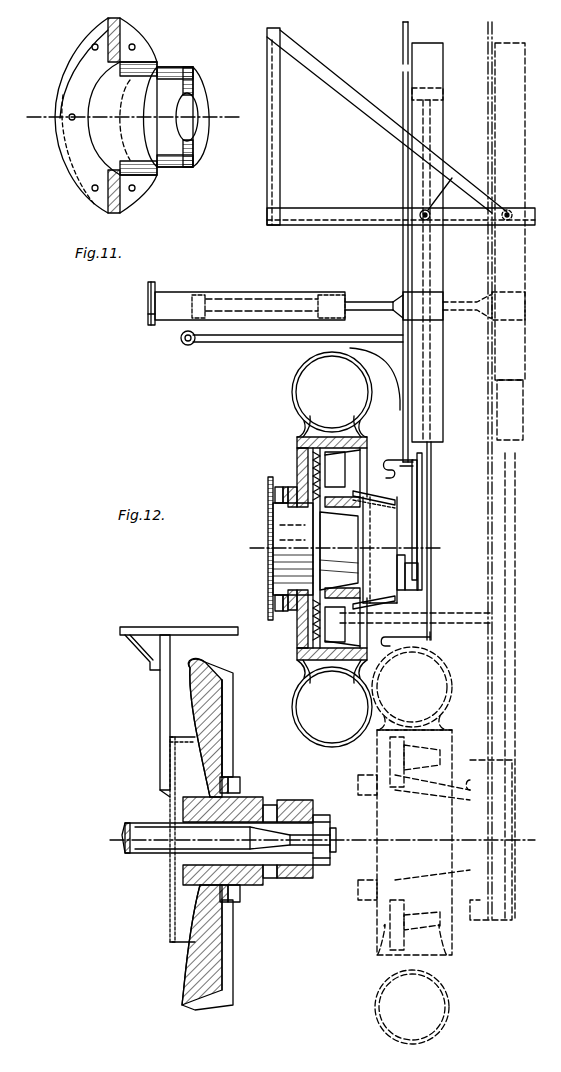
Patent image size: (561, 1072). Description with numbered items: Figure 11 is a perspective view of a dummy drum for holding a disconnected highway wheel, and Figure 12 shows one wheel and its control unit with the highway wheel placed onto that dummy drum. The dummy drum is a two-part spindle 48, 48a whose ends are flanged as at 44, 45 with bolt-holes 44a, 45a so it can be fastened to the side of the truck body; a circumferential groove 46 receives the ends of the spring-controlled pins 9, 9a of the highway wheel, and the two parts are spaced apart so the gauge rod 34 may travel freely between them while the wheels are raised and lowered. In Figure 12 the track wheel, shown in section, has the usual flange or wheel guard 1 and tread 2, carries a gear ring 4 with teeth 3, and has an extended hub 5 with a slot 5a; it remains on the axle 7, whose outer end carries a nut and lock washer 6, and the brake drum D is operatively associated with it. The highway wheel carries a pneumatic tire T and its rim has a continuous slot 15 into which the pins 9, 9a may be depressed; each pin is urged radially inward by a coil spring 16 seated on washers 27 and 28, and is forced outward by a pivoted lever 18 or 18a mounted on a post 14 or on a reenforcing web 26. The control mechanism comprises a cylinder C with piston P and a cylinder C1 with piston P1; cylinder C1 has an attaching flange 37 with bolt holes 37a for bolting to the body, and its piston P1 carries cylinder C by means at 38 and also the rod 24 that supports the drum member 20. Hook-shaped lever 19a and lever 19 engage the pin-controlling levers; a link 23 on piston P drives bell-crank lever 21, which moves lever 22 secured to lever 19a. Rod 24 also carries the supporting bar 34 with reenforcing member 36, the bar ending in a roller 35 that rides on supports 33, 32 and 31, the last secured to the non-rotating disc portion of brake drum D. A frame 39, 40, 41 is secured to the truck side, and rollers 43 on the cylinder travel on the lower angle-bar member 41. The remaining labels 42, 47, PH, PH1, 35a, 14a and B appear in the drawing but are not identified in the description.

In FIG. 11, the flange 44 is at (95, 32).
In FIG. 12, the flange 44 is at (273, 535).
In FIG. 11, the flange 45 is at (128, 27).
In FIG. 12, the flange 45 is at (273, 575).
In FIG. 11, the bolt-holes 45a is at (135, 47).
In FIG. 11, the bolt-holes 44a is at (92, 50).
In FIG. 11, the circumferential groove 46 is at (110, 145).
In FIG. 12, the circumferential groove 46 is at (310, 548).
In FIG. 12, the cone member 47 is at (339, 551).
In FIG. 11, the spindle part 48 is at (185, 95).
In FIG. 11, the spindle part 48a is at (200, 133).
In FIG. 12, the frame member 39 is at (280, 133).
In FIG. 12, the frame member 40 is at (350, 96).
In FIG. 12, the lower frame member 41 is at (343, 213).
In FIG. 12, the pivot 42 is at (432, 219).
In FIG. 12, the roller 43 is at (452, 184).
In FIG. 12, the rod 24 is at (402, 250).
In FIG. 12, the cylinder C is at (443, 355).
In FIG. 12, the piston head PH is at (443, 90).
In FIG. 12, the cylinder carrying means 38 is at (400, 296).
In FIG. 12, the cylinder C1 is at (272, 293).
In FIG. 12, the attaching flange 37 is at (148, 297).
In FIG. 12, the bolt holes 37a is at (148, 318).
In FIG. 12, the piston head PH1 is at (198, 294).
In FIG. 12, the piston P1 is at (357, 302).
In FIG. 12, the supporting bar 34 is at (272, 343).
In FIG. 12, the roller 35 is at (181, 338).
In FIG. 12, the pin bearing 35a is at (185, 343).
In FIG. 12, the reenforcing member 36 is at (393, 365).
In FIG. 12, the pneumatic tire T is at (296, 392).
In FIG. 12, the continuous slot 15 is at (298, 437).
In FIG. 12, the washer 27 is at (297, 455).
In FIG. 12, the washer 28 is at (292, 487).
In FIG. 12, the pin 9 is at (322, 528).
In FIG. 12, the pin 9a is at (314, 448).
In FIG. 12, the plate 14a is at (346, 437).
In FIG. 12, the post 14 is at (346, 661).
In FIG. 12, the coil spring 16 is at (342, 547).
In FIG. 12, the reenforcing web 26 is at (366, 450).
In FIG. 12, the lever 18a is at (377, 508).
In FIG. 12, the lever 18 is at (374, 595).
In FIG. 12, the drum member 20 is at (397, 580).
In FIG. 12, the hook-shaped lever 19a is at (396, 458).
In FIG. 12, the lever 19 is at (432, 638).
In FIG. 12, the piston P is at (432, 498).
In FIG. 12, the link 23 is at (422, 518).
In FIG. 12, the lever 22 is at (417, 538).
In FIG. 12, the bell-crank lever 21 is at (418, 573).
In FIG. 12, the frame member 33 is at (163, 615).
In FIG. 12, the support 32 is at (145, 655).
In FIG. 12, the support 31 is at (160, 708).
In FIG. 12, the brake drum D is at (180, 737).
In FIG. 12, the tread 2 is at (212, 675).
In FIG. 12, the flange or wheel guard 1 is at (195, 665).
In FIG. 12, the teeth 3 is at (240, 783).
In FIG. 12, the gear ring 4 is at (226, 777).
In FIG. 12, the extended hub 5 is at (300, 878).
In FIG. 12, the slot 5a is at (272, 878).
In FIG. 12, the axle 7 is at (150, 823).
In FIG. 12, the bearing shaft B is at (232, 838).
In FIG. 12, the nut and lock washer 6 is at (320, 815).